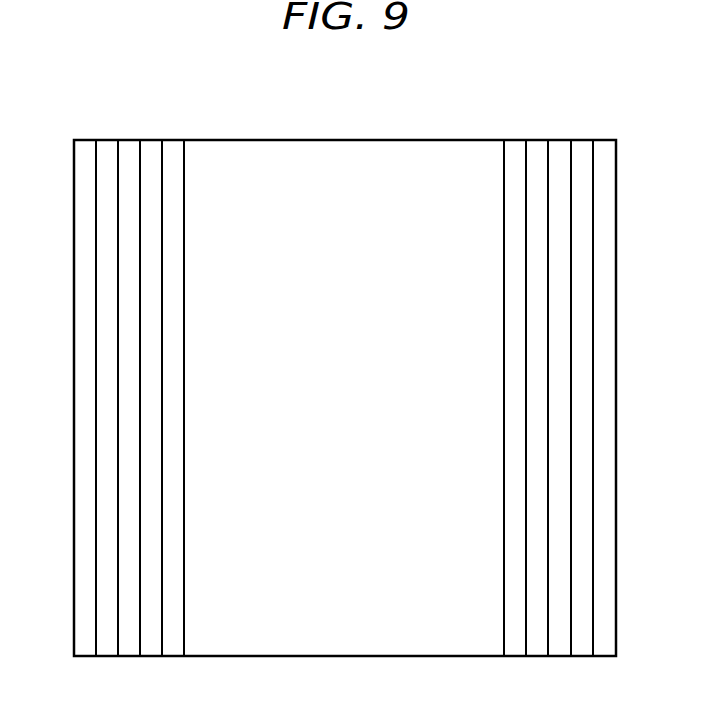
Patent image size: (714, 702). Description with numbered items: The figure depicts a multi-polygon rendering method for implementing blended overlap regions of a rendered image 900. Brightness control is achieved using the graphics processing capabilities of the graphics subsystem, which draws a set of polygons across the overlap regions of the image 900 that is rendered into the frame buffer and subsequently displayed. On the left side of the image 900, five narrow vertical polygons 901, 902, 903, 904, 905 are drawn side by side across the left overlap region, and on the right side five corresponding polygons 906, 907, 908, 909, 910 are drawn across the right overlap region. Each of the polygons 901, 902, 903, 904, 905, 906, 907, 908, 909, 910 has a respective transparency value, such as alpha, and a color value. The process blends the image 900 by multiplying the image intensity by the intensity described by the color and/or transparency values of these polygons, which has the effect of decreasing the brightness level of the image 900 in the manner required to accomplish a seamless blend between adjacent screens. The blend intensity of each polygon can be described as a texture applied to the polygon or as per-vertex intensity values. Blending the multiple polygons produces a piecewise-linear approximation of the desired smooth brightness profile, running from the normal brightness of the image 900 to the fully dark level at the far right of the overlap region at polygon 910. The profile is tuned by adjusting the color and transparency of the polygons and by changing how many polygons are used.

The image 900 is at (363, 234).
The polygon 901 is at (82, 140).
The polygon 902 is at (107, 140).
The polygon 903 is at (125, 140).
The polygon 904 is at (150, 140).
The polygon 905 is at (173, 140).
The polygon 906 is at (510, 140).
The polygon 907 is at (540, 140).
The polygon 908 is at (562, 140).
The polygon 909 is at (582, 140).
The polygon 910 is at (607, 140).